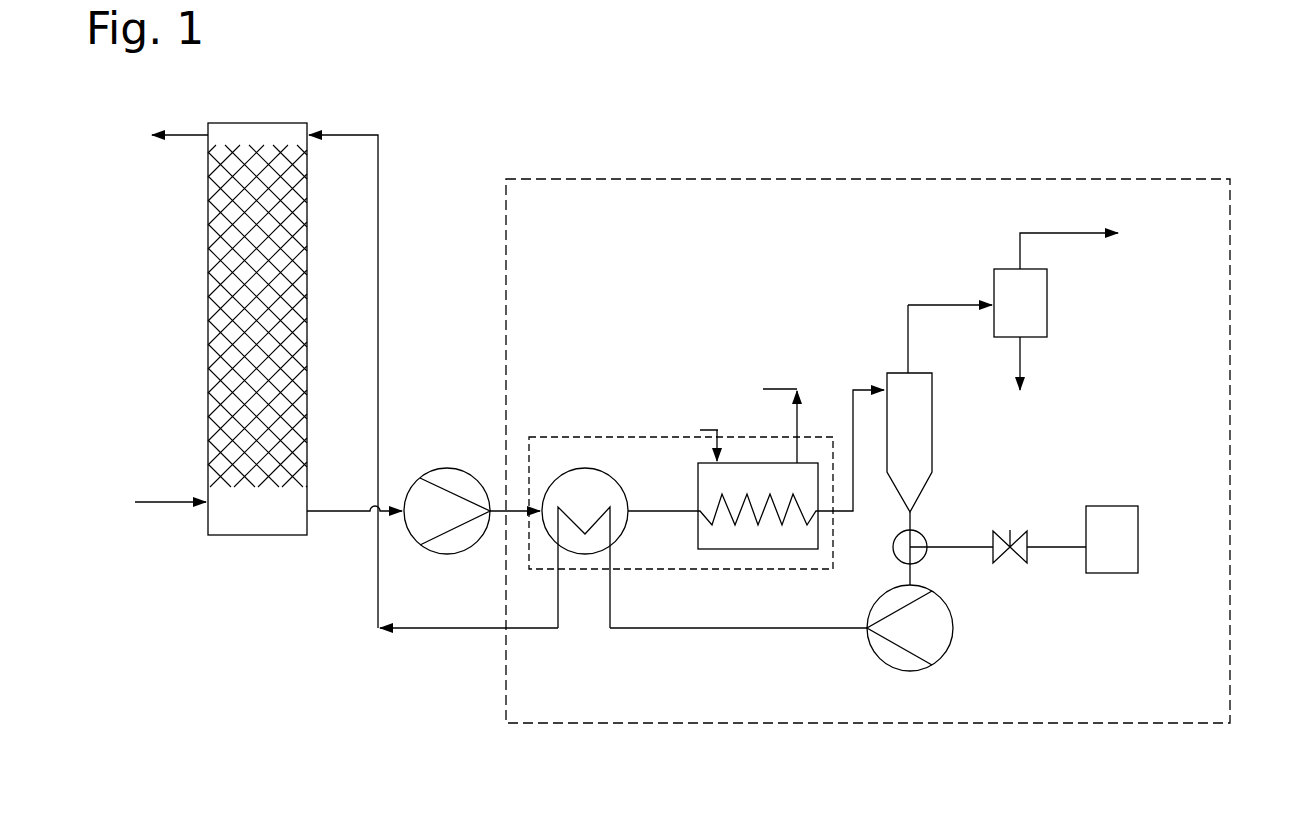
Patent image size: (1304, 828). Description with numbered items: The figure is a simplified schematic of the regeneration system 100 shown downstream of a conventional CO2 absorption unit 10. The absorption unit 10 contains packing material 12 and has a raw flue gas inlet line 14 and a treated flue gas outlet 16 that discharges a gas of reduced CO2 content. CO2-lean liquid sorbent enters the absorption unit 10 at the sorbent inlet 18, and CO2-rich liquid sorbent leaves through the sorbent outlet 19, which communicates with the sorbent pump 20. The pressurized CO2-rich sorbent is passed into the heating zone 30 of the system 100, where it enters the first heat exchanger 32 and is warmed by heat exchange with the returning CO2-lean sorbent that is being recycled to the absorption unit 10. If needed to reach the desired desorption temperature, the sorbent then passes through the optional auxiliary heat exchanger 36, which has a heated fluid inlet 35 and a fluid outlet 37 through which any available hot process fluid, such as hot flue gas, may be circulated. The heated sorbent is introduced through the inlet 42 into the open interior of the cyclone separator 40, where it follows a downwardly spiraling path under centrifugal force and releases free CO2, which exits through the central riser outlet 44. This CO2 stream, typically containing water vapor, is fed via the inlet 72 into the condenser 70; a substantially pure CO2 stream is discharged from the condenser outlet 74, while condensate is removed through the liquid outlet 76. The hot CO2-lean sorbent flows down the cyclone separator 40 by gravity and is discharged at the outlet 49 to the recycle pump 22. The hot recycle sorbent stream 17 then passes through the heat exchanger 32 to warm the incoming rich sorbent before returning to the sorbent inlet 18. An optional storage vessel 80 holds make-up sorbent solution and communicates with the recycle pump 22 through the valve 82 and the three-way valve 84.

The CO2 absorption unit 10 is at (206, 252).
The packing material 12 is at (245, 323).
The raw flue gas inlet line 14 is at (152, 503).
The treated flue gas outlet 16 is at (159, 135).
The hot recycle sorbent stream 17 is at (628, 630).
The sorbent inlet 18 is at (433, 367).
The sorbent outlet 19 is at (345, 513).
The sorbent pump 20 is at (416, 524).
The recycle pump 22 is at (906, 641).
The heating zone 30 is at (610, 437).
The first heat exchanger 32 is at (569, 502).
The heated fluid inlet 35 is at (717, 430).
The auxiliary heat exchanger 36 is at (741, 491).
The fluid outlet 37 is at (777, 389).
The cyclone separator 40 is at (893, 435).
The inlet 42 is at (851, 432).
The central riser outlet 44 is at (908, 327).
The outlet 49 is at (913, 516).
The condenser 70 is at (1004, 313).
The inlet 72 is at (950, 287).
The condenser outlet 74 is at (1099, 237).
The liquid outlet 76 is at (1040, 363).
The storage vessel 80 is at (1097, 548).
The valve 82 is at (1014, 560).
The 3-way valve 84 is at (920, 534).
The system 100 is at (799, 176).